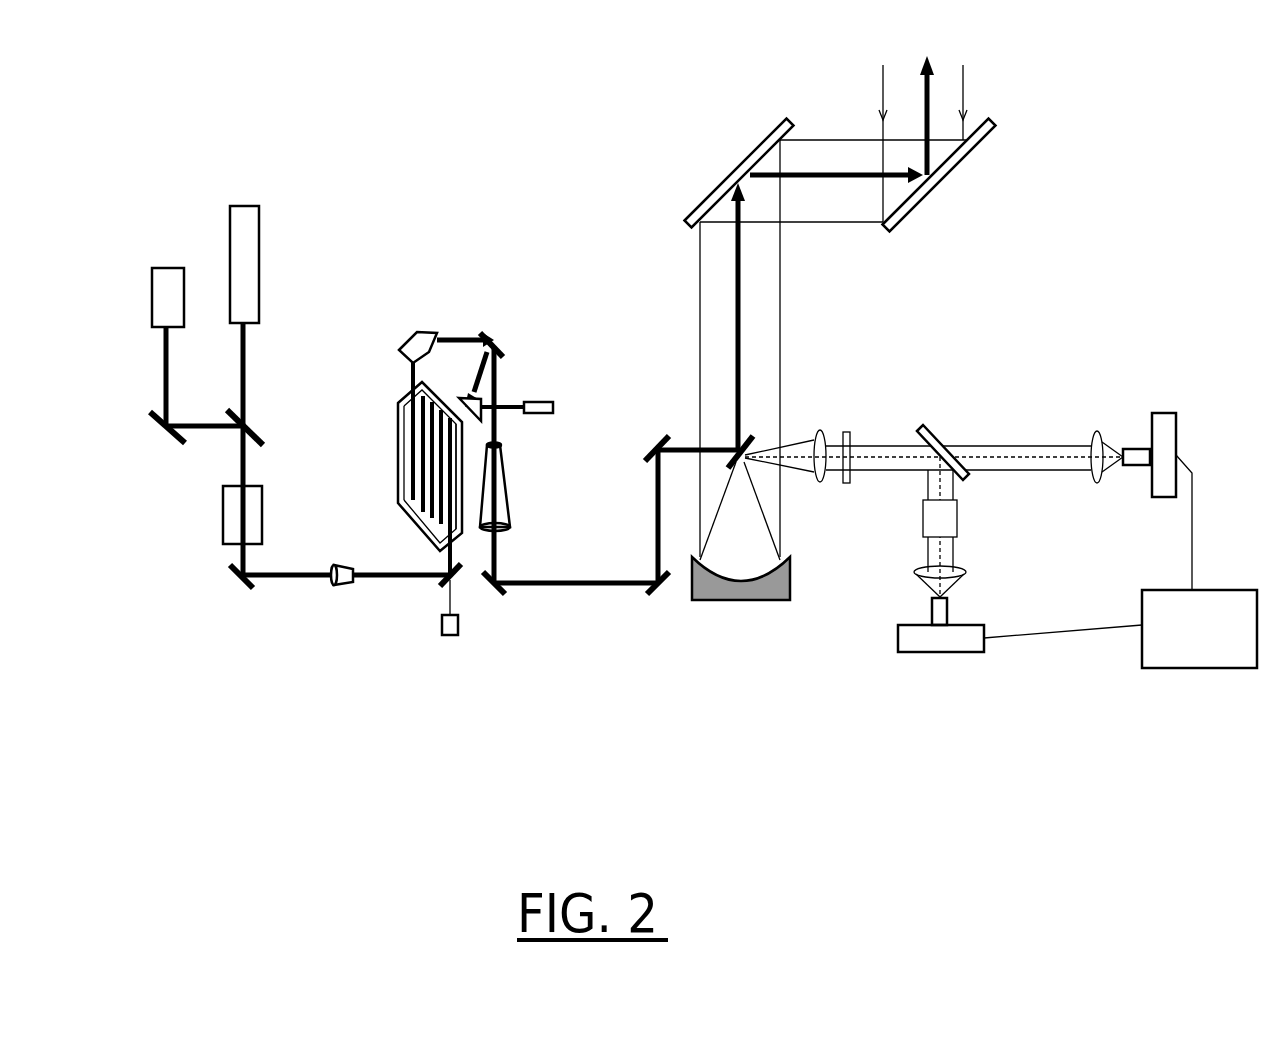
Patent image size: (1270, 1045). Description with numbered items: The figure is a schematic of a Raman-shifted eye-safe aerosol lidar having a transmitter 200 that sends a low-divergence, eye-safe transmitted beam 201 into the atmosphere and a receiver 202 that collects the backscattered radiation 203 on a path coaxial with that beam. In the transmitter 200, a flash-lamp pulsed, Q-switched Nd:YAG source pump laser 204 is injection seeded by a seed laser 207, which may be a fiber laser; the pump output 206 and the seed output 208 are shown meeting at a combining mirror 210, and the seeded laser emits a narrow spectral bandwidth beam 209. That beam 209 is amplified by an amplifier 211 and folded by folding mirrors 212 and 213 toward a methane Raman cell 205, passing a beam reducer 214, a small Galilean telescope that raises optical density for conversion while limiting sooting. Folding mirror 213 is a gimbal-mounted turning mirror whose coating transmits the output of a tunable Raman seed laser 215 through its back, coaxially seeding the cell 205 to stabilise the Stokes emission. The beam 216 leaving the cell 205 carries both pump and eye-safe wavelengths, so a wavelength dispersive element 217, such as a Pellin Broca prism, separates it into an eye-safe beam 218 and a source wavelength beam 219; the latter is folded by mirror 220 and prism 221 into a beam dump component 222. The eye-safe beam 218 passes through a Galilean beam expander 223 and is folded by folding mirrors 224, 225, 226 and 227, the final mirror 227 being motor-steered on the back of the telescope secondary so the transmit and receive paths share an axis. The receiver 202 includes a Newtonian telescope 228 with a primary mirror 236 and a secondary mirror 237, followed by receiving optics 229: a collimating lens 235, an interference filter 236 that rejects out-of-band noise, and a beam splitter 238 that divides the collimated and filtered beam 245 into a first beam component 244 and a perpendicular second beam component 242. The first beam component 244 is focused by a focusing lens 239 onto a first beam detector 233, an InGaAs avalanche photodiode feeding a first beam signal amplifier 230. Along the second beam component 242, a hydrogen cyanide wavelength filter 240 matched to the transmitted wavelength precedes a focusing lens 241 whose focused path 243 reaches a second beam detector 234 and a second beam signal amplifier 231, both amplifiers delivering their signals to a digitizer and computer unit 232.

The transmitter 200 is at (484, 140).
The transmitted beam 201 is at (920, 102).
The receiver 202 is at (927, 752).
The backscattered radiation 203 is at (967, 83).
The source pump laser 204 is at (243, 203).
The Raman cell 205 is at (395, 470).
The laser output beam 206 is at (250, 336).
The source laser seed laser 207 is at (155, 265).
The seed beam 208 is at (163, 370).
The narrow spectral bandwidth beam 209 is at (254, 468).
The beam combiner mirror 210 is at (263, 433).
The amplifier 211 is at (218, 510).
The folding mirror 212 is at (236, 580).
The folding mirror 213 is at (440, 586).
The beam reducer 214 is at (344, 592).
The Raman seed laser 215 is at (449, 637).
The beam exiting the Raman cell 216 is at (407, 370).
The wavelength dispersive element 217 is at (405, 333).
The eye-safe beam 218 is at (513, 465).
The source wavelength beam 219 is at (458, 333).
The mirror 220 is at (497, 343).
The prism 221 is at (482, 418).
The beam dump component 222 is at (546, 402).
The beam expander 223 is at (512, 500).
The folding mirror 224 is at (505, 593).
The folding mirror 225 is at (660, 593).
The folding mirror 226 is at (648, 446).
The folding mirror 227 is at (735, 442).
The telescope 228 is at (740, 632).
The receiving optics 229 is at (953, 352).
The first beam signal amplifier 230 is at (1167, 407).
The second beam signal amplifier 231 is at (925, 655).
The digitizer and computer unit 232 is at (1191, 670).
The first beam detector 233 is at (1135, 442).
The second beam detector 234 is at (928, 608).
The collimating lens 235 is at (823, 430).
The interference filter 236 is at (850, 423).
The secondary mirror 237 is at (152, 422).
The beam splitter 238 is at (929, 423).
The focusing lens 239 is at (1096, 488).
The wavelength filter 240 is at (962, 515).
The second beam component focusing lens 241 is at (915, 567).
The second beam component 242 is at (925, 485).
The focused beam 243 is at (953, 548).
The first beam component 244 is at (1018, 440).
The collimated and filtered beam 245 is at (888, 442).